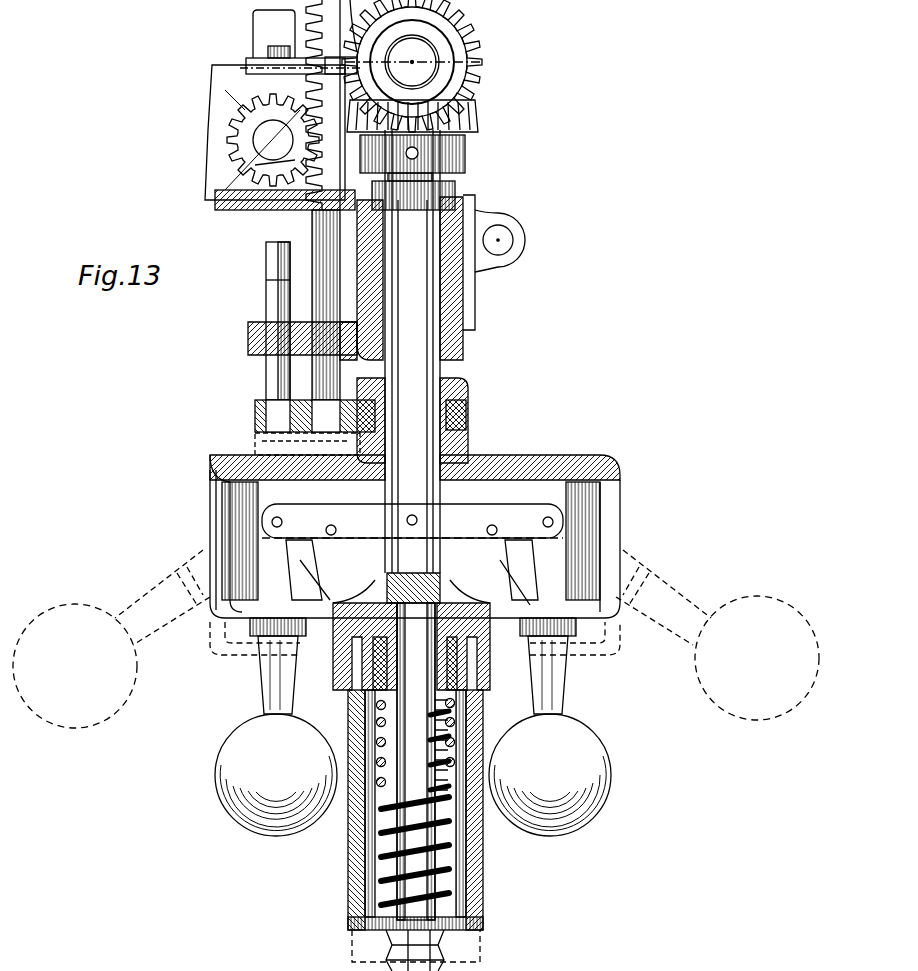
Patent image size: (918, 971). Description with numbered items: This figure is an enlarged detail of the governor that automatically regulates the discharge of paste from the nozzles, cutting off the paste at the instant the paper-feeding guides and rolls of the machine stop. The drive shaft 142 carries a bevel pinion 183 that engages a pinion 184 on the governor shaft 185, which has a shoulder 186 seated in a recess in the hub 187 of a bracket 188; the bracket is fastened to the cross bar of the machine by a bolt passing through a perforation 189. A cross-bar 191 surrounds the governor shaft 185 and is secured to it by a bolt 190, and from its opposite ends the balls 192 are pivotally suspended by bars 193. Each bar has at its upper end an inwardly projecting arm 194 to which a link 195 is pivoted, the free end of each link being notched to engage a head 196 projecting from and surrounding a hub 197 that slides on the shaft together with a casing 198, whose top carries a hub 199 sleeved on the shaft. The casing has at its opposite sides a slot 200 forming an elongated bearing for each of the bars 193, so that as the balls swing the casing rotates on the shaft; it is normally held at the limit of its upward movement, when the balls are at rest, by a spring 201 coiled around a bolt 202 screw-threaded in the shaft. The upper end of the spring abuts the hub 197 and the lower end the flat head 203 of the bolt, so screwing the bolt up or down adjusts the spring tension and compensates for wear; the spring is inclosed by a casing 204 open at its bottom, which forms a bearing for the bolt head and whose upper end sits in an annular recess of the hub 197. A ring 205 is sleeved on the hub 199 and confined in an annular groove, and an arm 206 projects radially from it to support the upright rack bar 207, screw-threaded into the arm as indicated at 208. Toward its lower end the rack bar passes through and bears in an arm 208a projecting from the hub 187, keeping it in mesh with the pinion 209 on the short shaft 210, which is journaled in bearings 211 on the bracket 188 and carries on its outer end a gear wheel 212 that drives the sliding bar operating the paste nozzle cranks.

The drive shaft 142 is at (430, 58).
The bevel pinion 183 is at (450, 38).
The pinion 184 is at (470, 118).
The governor shaft 185 is at (430, 177).
The shoulder 186 is at (455, 196).
The hub 187 is at (445, 293).
The bracket 188 is at (518, 226).
The perforation 189 is at (515, 242).
The bolt 190 is at (455, 460).
The cross-bar 191 is at (412, 521).
The balls 192 is at (220, 773).
The bars 193 is at (270, 672).
The inwardly projecting arms 194 is at (225, 512).
The links 195 is at (325, 562).
The head 196 is at (415, 582).
The hub 197 is at (338, 665).
The casing 198 is at (222, 477).
The hub 199 is at (466, 388).
The slot 200 is at (212, 530).
The spring 201 is at (385, 865).
The bolt 202 is at (403, 805).
The flat head 203 is at (378, 929).
The casing 204 is at (480, 852).
The ring 205 is at (470, 412).
The arm 206 is at (255, 419).
The rack bar 207 is at (318, 233).
The screw-threading 208 is at (275, 437).
The arm 208a is at (300, 345).
The pinion 209 is at (262, 130).
The short shaft 210 is at (270, 150).
The bearings 211 is at (230, 80).
The gear wheel 212 is at (232, 116).